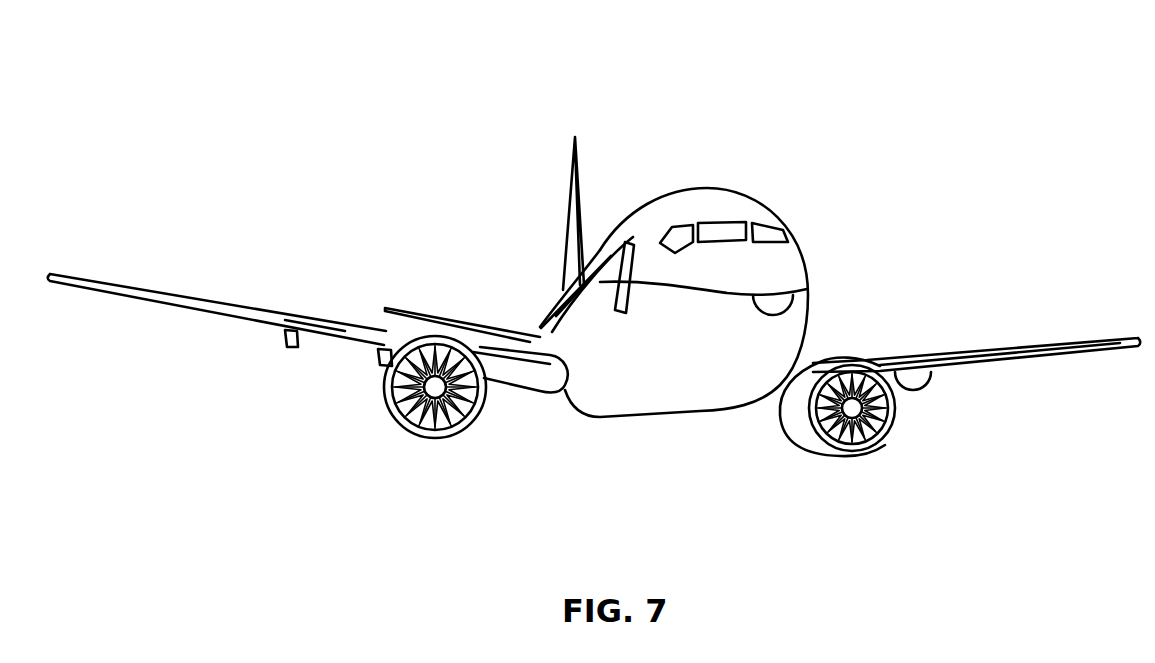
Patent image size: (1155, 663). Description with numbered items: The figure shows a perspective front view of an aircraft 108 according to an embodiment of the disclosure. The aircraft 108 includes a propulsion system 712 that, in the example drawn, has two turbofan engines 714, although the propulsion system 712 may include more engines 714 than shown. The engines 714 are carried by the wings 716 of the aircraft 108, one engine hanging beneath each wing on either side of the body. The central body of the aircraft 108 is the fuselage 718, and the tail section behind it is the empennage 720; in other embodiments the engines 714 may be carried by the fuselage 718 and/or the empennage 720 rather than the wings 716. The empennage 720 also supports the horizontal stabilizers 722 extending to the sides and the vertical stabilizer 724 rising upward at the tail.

The aircraft 108 is at (322, 78).
The propulsion system 712 is at (952, 441).
The turbofan engines 714 is at (430, 436).
The wings 716 is at (195, 302).
The fuselage 718 is at (810, 259).
The empennage 720 is at (562, 290).
The horizontal stabilizers 722 is at (425, 312).
The vertical stabilizer 724 is at (570, 180).